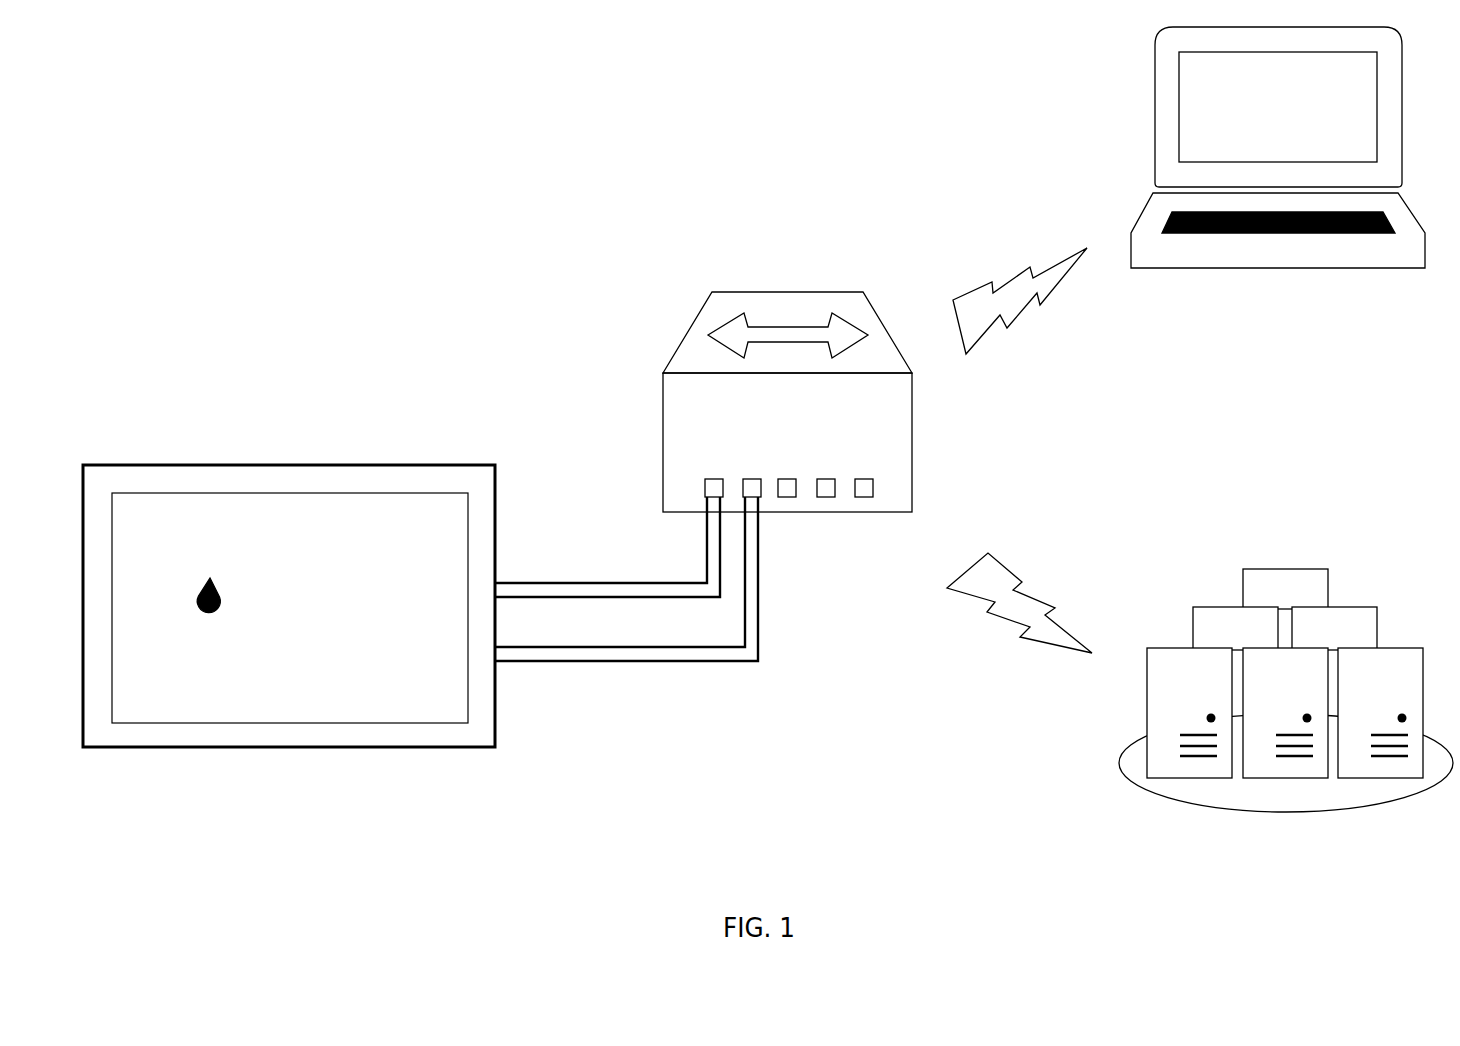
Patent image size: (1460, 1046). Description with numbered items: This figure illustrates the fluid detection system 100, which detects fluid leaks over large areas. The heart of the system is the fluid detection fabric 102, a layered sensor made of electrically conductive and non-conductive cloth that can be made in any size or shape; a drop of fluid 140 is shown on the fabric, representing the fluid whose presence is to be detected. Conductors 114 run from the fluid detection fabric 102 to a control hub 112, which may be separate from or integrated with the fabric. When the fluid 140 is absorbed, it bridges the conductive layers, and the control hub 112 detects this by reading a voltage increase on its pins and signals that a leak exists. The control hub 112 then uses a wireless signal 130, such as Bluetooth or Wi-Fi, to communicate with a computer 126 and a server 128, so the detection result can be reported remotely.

The fluid detection system 100 is at (760, 84).
The fluid detection fabric 102 is at (295, 465).
The control hub 112 is at (787, 402).
The conductors 114 is at (626, 593).
The computer 126 is at (1278, 163).
The server 128 is at (1286, 702).
The wireless signal 130 is at (1019, 449).
The fluid 140 is at (220, 593).